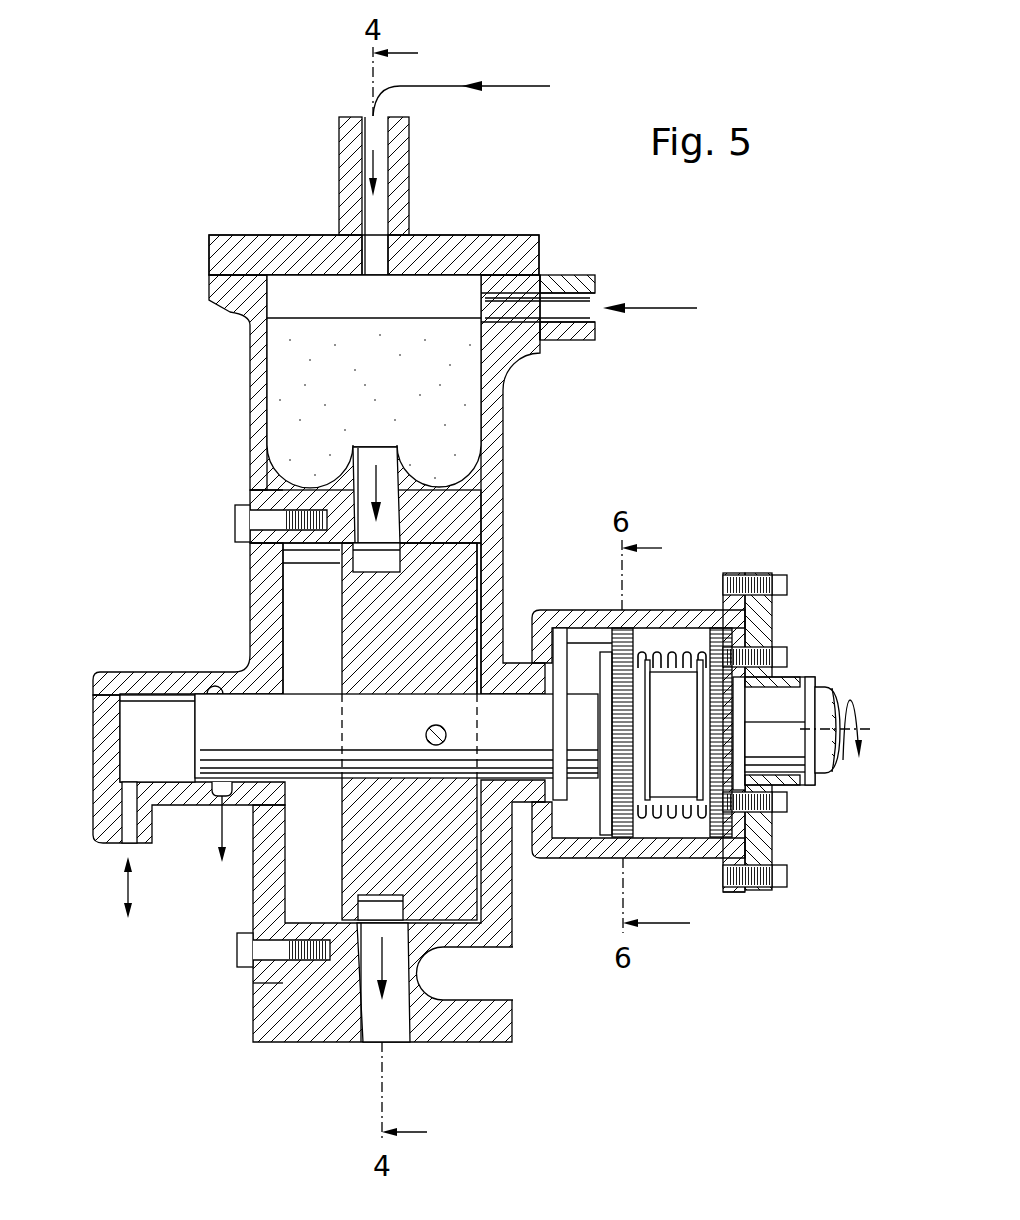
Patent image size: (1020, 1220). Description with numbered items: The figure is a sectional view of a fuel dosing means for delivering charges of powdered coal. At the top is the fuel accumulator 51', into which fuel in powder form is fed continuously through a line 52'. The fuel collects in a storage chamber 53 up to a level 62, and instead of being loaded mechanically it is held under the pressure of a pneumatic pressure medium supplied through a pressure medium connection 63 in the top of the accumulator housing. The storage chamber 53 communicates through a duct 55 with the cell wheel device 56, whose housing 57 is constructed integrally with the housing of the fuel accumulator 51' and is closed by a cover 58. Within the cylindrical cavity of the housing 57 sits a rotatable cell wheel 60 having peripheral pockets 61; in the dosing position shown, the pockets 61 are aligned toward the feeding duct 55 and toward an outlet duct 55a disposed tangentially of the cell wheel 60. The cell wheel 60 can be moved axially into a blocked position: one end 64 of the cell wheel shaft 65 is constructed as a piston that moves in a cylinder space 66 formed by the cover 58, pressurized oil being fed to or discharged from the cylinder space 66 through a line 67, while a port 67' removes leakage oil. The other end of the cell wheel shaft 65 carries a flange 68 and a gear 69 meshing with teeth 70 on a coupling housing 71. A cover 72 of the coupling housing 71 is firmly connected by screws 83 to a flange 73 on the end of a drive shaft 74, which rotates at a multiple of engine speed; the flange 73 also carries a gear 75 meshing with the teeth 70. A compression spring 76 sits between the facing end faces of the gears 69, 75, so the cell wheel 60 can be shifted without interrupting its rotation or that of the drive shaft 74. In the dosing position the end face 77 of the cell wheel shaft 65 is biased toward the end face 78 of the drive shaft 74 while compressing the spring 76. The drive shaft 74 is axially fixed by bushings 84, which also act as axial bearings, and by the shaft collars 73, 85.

The fuel accumulator 51' is at (395, 602).
The line 52' is at (589, 328).
The storage chamber 53 is at (374, 381).
The duct 55 is at (391, 450).
The outlet duct 55a is at (393, 1033).
The cell-wheel device 56 is at (215, 500).
The housing 57 is at (512, 525).
The cover 58 is at (252, 612).
The cell wheel 60 is at (409, 731).
The peripheral pockets 61 is at (392, 895).
The level 62 is at (378, 316).
The pressure medium connection 63 is at (341, 196).
The end of the cell wheel shaft 64 is at (196, 724).
The cell wheel shaft 65 is at (396, 732).
The cylinder space 66 is at (143, 700).
The line 67 is at (151, 850).
The port 67' is at (207, 822).
The flange 68 is at (701, 710).
The gear 69 is at (618, 630).
The teeth 70 is at (647, 632).
The coupling housing 71 is at (738, 566).
The cover 72 is at (778, 617).
The flange 73 is at (787, 747).
The drive shaft 74 is at (827, 700).
The gear 75 is at (716, 637).
The compression spring 76 is at (680, 815).
The end face 77 is at (625, 753).
The end face 78 is at (648, 722).
The screws 83 is at (783, 658).
The bushings 84 is at (788, 786).
The shaft collar 85 is at (812, 741).